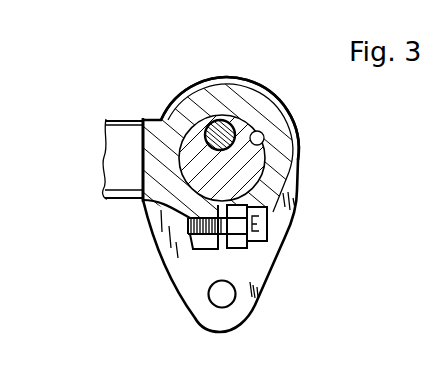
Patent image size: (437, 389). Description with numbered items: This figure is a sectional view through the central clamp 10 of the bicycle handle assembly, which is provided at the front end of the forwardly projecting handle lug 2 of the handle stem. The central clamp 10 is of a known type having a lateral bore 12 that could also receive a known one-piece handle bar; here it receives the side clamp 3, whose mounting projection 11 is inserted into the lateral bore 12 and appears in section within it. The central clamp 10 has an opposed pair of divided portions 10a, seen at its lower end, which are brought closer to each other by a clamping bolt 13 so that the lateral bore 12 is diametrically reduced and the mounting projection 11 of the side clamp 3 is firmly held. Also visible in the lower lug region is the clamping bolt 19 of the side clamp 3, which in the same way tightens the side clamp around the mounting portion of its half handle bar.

The handle lug 2 is at (120, 121).
The side clamp 3 is at (268, 90).
The central clamp 10 is at (231, 83).
The divided portions 10a is at (205, 252).
The mounting projection 11 is at (195, 150).
The lateral bore 12 is at (252, 147).
The clamping bolt 13 is at (268, 209).
The clamping bolt 19 is at (225, 296).